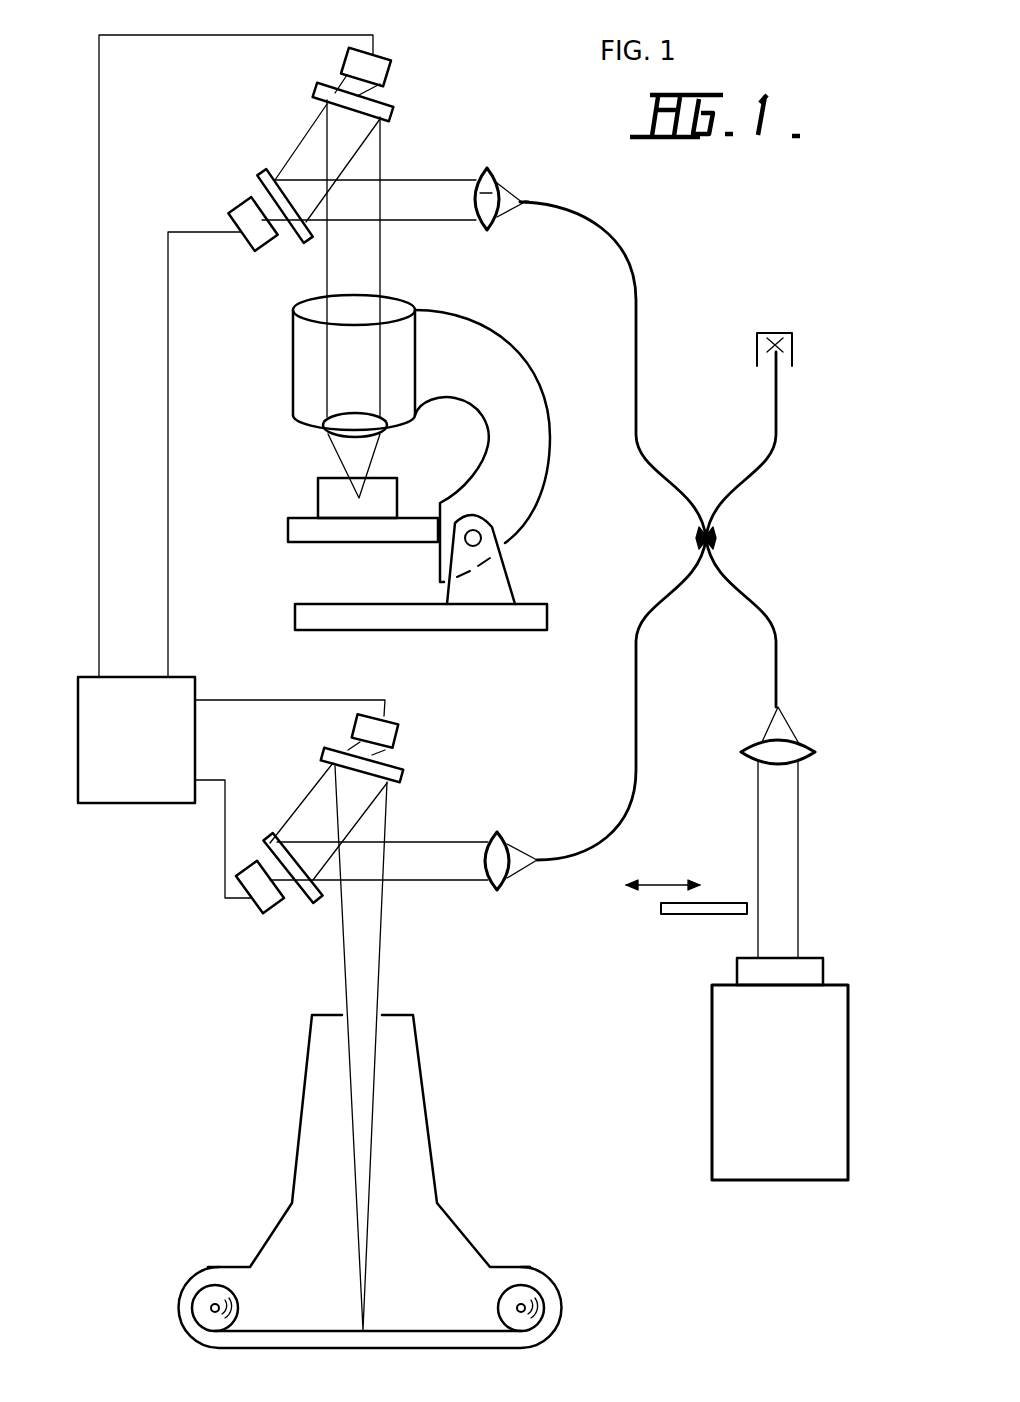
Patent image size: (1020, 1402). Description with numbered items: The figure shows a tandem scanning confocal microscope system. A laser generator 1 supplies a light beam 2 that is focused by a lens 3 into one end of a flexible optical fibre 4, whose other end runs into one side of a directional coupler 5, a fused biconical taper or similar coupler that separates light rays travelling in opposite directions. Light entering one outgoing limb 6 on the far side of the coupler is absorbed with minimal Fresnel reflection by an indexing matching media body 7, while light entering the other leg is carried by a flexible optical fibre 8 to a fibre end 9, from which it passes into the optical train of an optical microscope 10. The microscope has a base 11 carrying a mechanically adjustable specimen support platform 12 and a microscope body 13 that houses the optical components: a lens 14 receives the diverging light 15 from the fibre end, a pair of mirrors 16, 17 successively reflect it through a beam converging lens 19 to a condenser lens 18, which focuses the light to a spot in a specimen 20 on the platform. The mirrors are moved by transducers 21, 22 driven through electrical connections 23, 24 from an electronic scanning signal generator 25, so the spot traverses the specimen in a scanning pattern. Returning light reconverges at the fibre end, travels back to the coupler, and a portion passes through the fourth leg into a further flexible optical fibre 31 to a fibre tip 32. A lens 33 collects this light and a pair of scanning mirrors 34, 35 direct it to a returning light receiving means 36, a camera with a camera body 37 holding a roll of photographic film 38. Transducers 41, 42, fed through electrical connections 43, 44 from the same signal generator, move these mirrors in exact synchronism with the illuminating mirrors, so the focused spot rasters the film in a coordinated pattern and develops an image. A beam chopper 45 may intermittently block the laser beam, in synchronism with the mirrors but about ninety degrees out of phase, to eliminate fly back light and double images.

The laser generator 1 is at (743, 1068).
The light beam 2 is at (772, 823).
The lens 3 is at (783, 742).
The flexible optical fibre 4 is at (777, 623).
The directional coupler 5 is at (712, 540).
The outgoing limb 6 is at (777, 442).
The indexing matching media body 7 is at (781, 333).
The flexible optical fibre 8 is at (636, 300).
The fibre end 9 is at (527, 200).
The optical microscope 10 is at (553, 483).
The base 11 is at (298, 620).
The specimen support platform 12 is at (290, 530).
The microscope body 13 is at (300, 350).
The lens 14 is at (480, 188).
The light 15 is at (508, 205).
The mirror 16 is at (393, 110).
The mirror 17 is at (262, 174).
The lens 18 is at (325, 432).
The beam converging lens 19 is at (395, 307).
The specimen 20 is at (318, 495).
The transducer 21 is at (380, 66).
The transducer 22 is at (237, 200).
The electrical connection 23 is at (99, 550).
The electrical connection 24 is at (168, 537).
The electronic scanning signal generator 25 is at (113, 778).
The flexible optical fibre 31 is at (637, 680).
The fibre tip 32 is at (540, 856).
The lens 33 is at (487, 858).
The scanning mirror 34 is at (403, 775).
The scanning mirror 35 is at (316, 898).
The returning light receiving means 36 is at (353, 1057).
The camera body 37 is at (430, 1115).
The photographic film 38 is at (297, 1330).
The transducer 41 is at (395, 738).
The transducer 42 is at (262, 905).
The electrical connection 43 is at (235, 697).
The electrical connection 44 is at (225, 815).
The beam chopper 45 is at (680, 916).